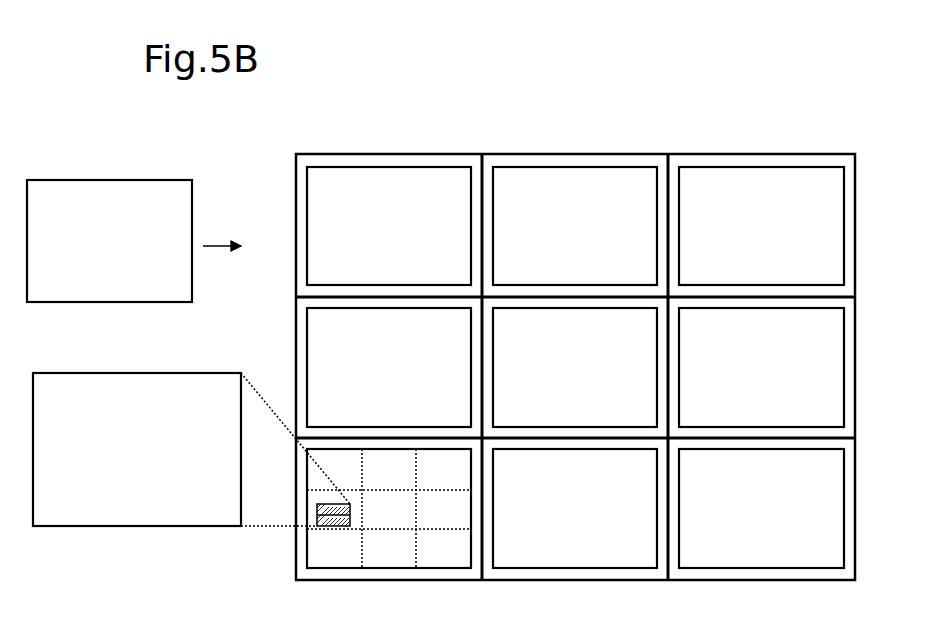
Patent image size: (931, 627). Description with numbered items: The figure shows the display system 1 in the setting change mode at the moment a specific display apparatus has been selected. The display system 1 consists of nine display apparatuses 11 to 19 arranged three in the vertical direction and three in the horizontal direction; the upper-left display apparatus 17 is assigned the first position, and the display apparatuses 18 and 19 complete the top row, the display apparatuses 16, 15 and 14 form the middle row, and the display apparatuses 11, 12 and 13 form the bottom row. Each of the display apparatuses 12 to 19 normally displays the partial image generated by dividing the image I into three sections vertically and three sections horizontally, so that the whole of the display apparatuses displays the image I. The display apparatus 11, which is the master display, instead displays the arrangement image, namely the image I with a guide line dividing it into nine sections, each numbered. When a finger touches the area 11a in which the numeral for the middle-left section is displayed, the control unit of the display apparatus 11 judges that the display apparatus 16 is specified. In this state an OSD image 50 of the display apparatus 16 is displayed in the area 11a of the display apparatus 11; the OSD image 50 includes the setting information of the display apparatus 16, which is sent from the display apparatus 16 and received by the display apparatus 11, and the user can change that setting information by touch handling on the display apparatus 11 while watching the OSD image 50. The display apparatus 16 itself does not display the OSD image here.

The display system 1 is at (506, 120).
The display apparatus 11 is at (353, 532).
The area 11a is at (313, 497).
The display apparatus 12 is at (580, 582).
The display apparatus 13 is at (765, 582).
The display apparatus 14 is at (755, 297).
The display apparatus 15 is at (580, 297).
The display apparatus 16 is at (394, 297).
The display apparatus 17 is at (384, 154).
The display apparatus 18 is at (568, 154).
The display apparatus 19 is at (755, 154).
The OSD image 50 is at (87, 373).
The image I is at (110, 180).